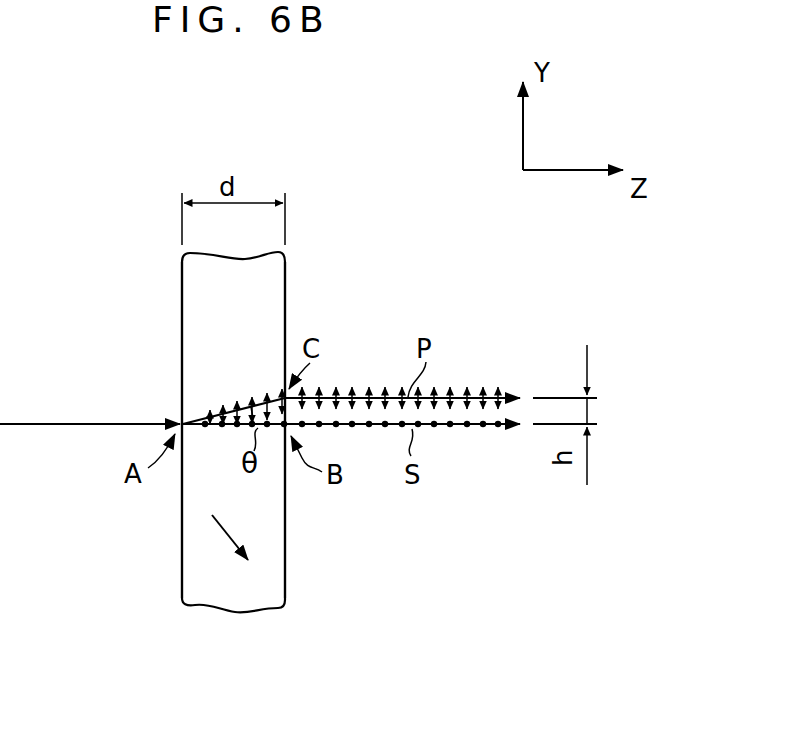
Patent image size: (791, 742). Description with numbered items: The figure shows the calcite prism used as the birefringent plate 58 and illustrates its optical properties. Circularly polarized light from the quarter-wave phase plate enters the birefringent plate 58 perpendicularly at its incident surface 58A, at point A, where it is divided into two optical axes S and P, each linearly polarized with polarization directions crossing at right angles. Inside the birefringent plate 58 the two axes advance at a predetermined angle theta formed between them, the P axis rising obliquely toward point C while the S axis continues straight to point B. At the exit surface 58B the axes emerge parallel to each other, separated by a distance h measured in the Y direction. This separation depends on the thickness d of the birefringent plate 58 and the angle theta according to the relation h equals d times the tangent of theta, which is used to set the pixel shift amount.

The birefringent plate 58 is at (186, 522).
The incident surface of plate 58A is at (179, 306).
The exit surface of plate 58B is at (290, 284).